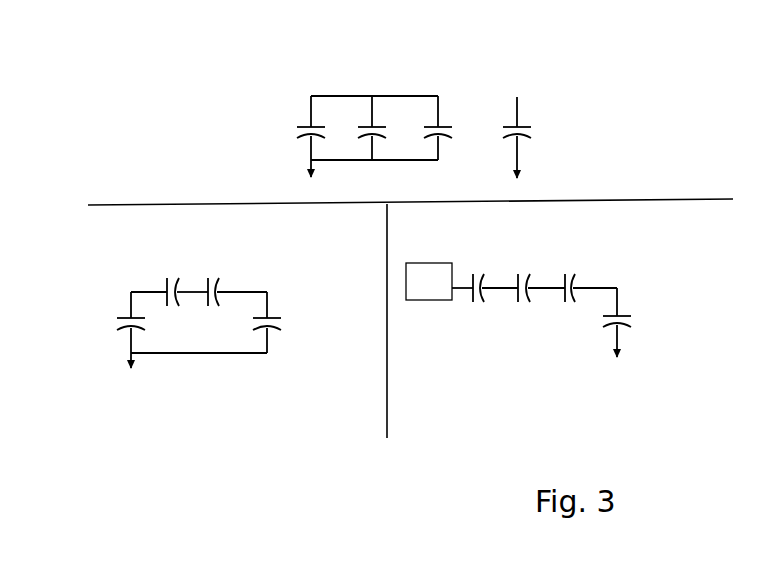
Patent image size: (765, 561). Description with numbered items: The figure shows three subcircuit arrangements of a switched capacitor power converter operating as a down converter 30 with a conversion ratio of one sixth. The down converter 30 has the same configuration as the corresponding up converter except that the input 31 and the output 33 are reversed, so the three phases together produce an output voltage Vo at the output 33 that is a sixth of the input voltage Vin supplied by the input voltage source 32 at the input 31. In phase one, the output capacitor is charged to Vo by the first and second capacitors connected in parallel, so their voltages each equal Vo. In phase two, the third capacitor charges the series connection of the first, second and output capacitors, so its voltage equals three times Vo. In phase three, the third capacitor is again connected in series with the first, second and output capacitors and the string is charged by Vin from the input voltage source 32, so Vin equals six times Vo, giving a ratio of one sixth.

The down converter 30 is at (135, 48).
The input 31 is at (472, 290).
The input voltage source Vin 32 is at (414, 302).
The output 33 is at (433, 93).